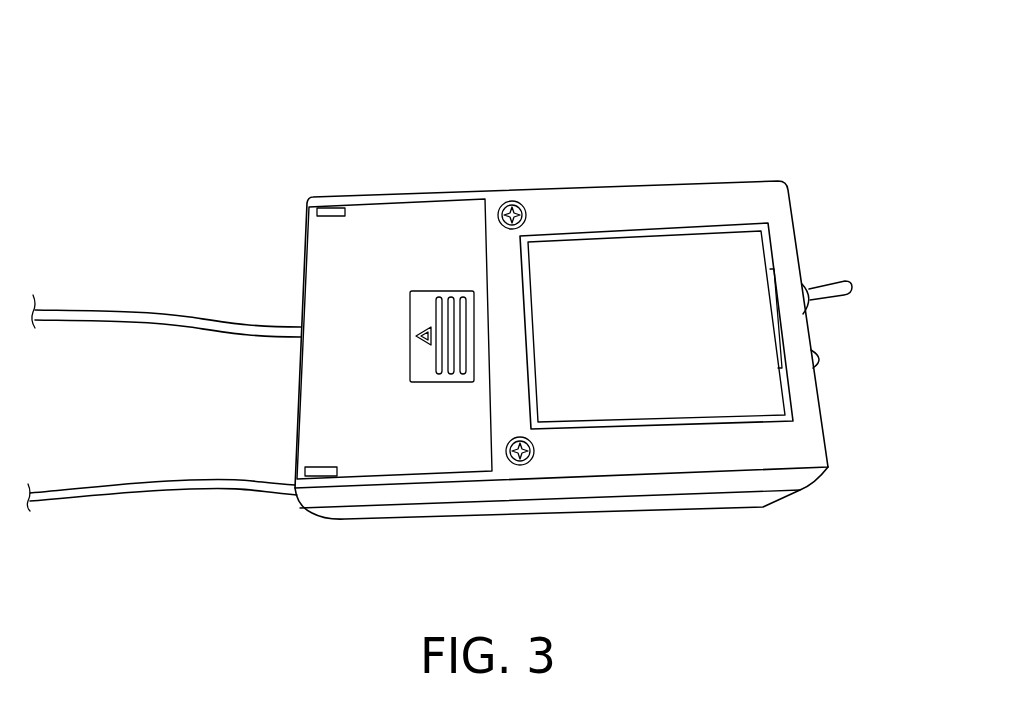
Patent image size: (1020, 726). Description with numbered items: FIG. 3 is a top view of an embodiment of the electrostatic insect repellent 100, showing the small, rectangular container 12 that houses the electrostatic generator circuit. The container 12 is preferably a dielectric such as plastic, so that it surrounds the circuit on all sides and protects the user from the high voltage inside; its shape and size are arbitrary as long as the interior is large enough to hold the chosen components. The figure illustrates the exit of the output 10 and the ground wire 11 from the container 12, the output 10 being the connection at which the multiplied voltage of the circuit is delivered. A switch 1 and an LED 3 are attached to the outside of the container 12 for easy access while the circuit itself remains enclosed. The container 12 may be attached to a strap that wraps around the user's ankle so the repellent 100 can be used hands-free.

The electrostatic insect repellent 100 is at (236, 117).
The switch 1 is at (853, 287).
The LED 3 is at (821, 358).
The output 10 is at (168, 312).
The ground wire 11 is at (163, 494).
The container 12 is at (527, 514).